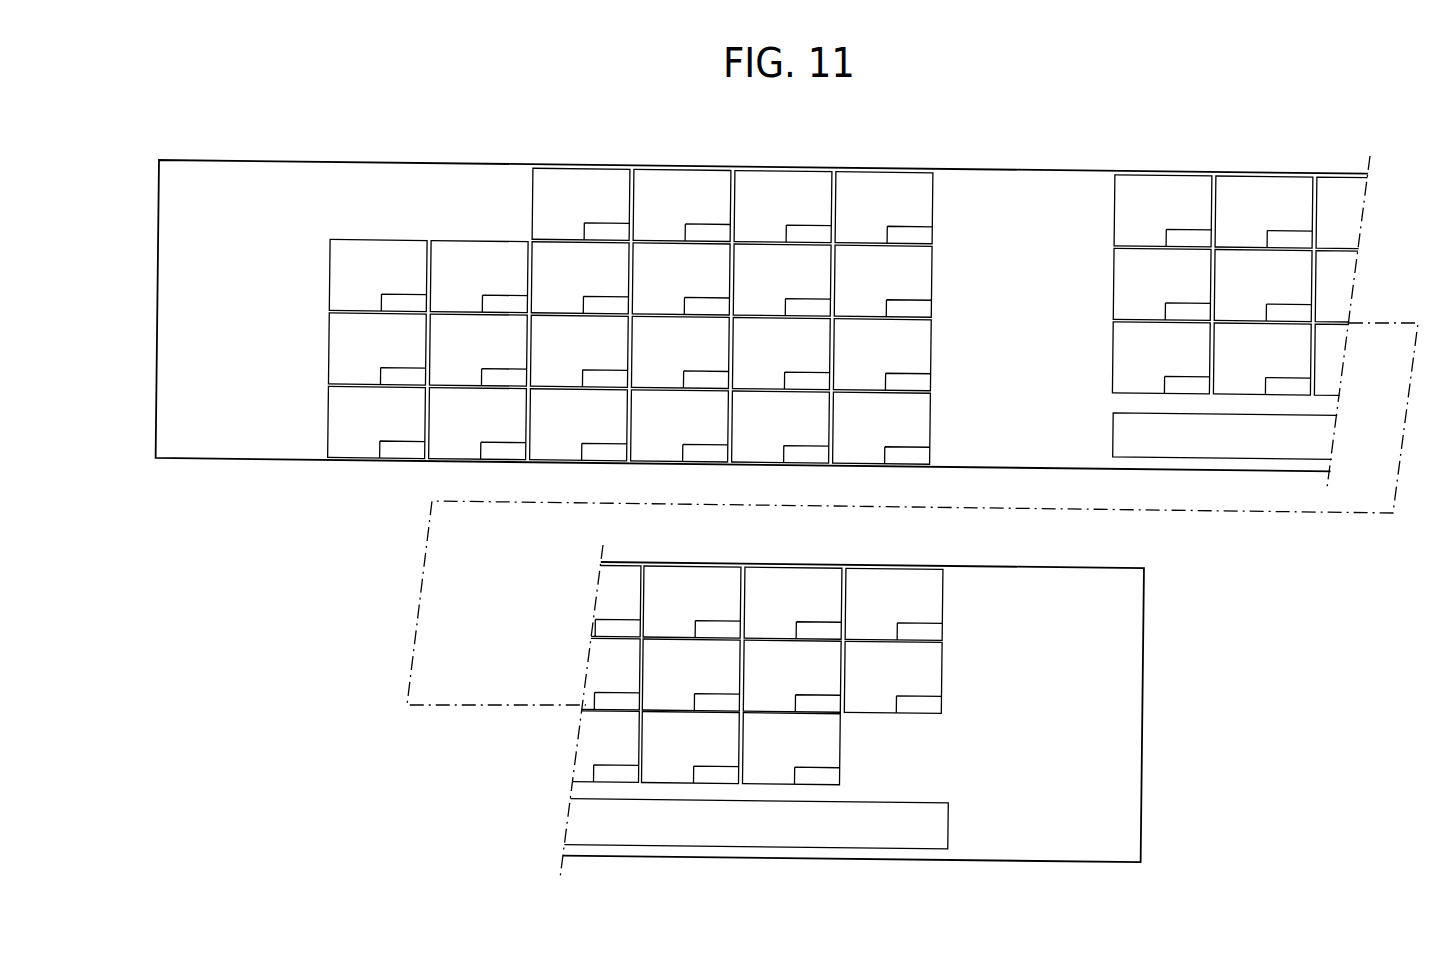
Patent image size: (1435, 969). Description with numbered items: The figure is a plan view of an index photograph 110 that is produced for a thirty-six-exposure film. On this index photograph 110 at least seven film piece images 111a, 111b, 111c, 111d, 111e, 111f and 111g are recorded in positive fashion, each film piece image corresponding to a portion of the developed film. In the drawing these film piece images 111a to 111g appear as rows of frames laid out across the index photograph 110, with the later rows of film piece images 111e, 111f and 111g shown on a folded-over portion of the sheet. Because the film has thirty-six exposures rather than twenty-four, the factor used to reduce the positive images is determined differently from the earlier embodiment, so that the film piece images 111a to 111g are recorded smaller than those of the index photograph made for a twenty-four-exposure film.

The index photograph 110 is at (516, 160).
The film piece image 111a is at (935, 209).
The film piece image 111b is at (935, 283).
The film piece image 111c is at (935, 357).
The film piece image 111d is at (932, 429).
The film piece image 111e is at (948, 602).
The film piece image 111f is at (948, 677).
The film piece image 111g is at (842, 755).